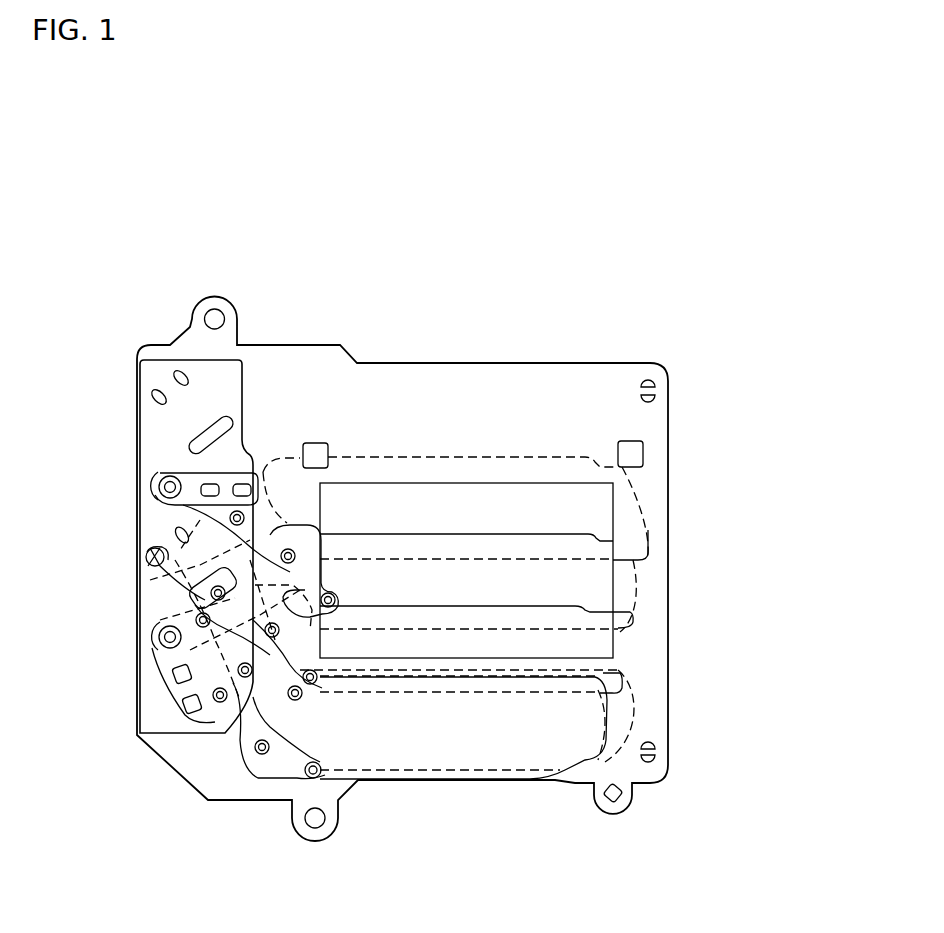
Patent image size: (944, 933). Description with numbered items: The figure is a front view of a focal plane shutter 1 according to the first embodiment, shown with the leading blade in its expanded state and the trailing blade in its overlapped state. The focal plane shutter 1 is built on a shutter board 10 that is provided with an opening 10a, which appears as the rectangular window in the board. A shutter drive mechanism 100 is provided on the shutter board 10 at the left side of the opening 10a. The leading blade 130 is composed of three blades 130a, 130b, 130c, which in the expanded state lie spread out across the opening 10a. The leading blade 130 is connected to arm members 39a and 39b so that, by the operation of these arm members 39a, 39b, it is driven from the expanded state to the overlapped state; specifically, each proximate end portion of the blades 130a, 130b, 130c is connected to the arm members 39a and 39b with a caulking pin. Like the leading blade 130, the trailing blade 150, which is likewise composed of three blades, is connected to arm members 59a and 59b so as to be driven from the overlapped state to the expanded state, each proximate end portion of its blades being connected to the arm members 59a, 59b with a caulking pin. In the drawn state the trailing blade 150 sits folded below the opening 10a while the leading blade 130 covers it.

The focal plane shutter 1 is at (110, 359).
The shutter board 10 is at (600, 386).
The opening 10a is at (504, 498).
The shutter drive mechanism 100 is at (122, 439).
The arm member 39a is at (160, 505).
The arm member 39b is at (130, 585).
The arm member 59a is at (160, 605).
The arm member 59b is at (160, 668).
The leading blade 130 is at (797, 527).
The blade 130a is at (585, 512).
The blade 130b is at (590, 588).
The blade 130c is at (587, 645).
The trailing blade 150 is at (458, 746).